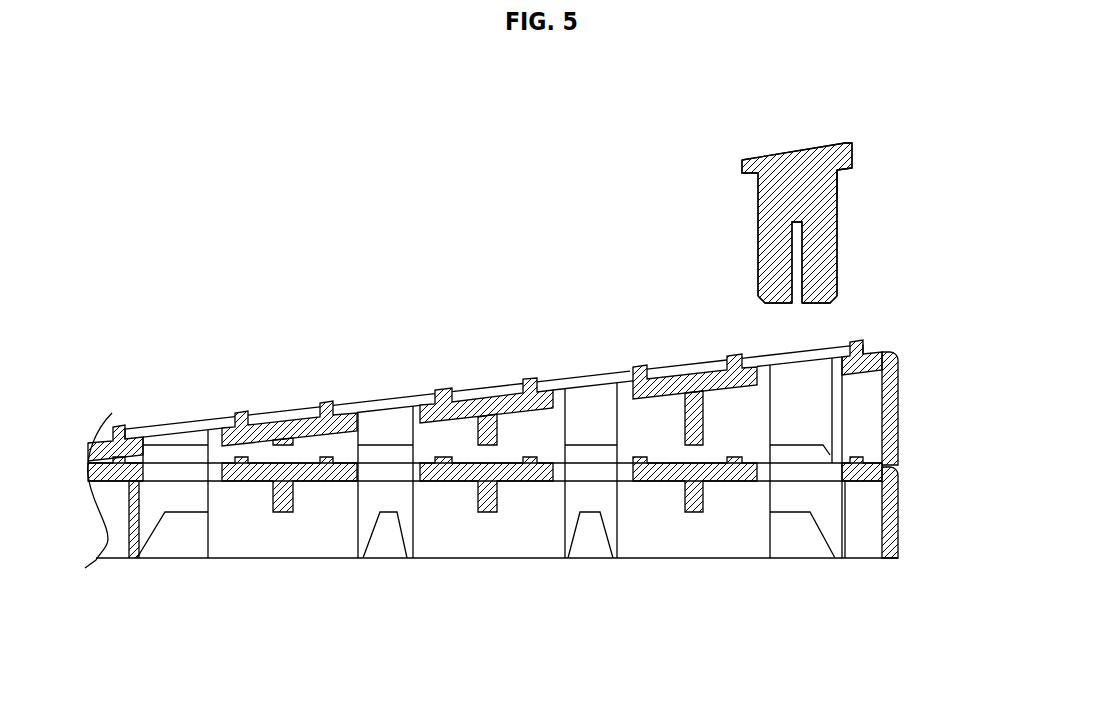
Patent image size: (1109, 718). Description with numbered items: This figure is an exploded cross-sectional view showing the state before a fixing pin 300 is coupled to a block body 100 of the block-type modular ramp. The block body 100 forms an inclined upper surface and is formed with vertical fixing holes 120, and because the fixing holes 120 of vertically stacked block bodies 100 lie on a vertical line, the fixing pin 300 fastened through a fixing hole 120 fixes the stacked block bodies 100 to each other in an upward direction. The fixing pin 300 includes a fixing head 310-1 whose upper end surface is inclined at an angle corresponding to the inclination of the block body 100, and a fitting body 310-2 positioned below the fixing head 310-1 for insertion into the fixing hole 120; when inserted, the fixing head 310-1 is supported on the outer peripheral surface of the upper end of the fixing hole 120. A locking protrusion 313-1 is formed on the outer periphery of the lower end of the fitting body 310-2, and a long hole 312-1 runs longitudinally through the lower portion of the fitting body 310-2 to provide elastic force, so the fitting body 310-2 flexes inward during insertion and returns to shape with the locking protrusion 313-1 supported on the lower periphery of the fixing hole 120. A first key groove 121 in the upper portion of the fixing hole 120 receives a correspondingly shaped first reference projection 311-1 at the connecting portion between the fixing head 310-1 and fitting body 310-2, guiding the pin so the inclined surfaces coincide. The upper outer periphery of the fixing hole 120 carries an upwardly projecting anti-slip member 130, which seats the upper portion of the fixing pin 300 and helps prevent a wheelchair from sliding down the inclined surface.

The block body 100 is at (300, 537).
The fixing hole 120 is at (404, 416).
The first key groove 121 is at (425, 416).
The anti-slip member 130 is at (328, 410).
The fixing pin 300 is at (736, 205).
The fixing head 310-1 is at (746, 158).
The fitting body 310-2 is at (822, 218).
The first reference projection 311-1 is at (840, 177).
The long hole 312-1 is at (798, 255).
The locking protrusion 313-1 is at (758, 290).